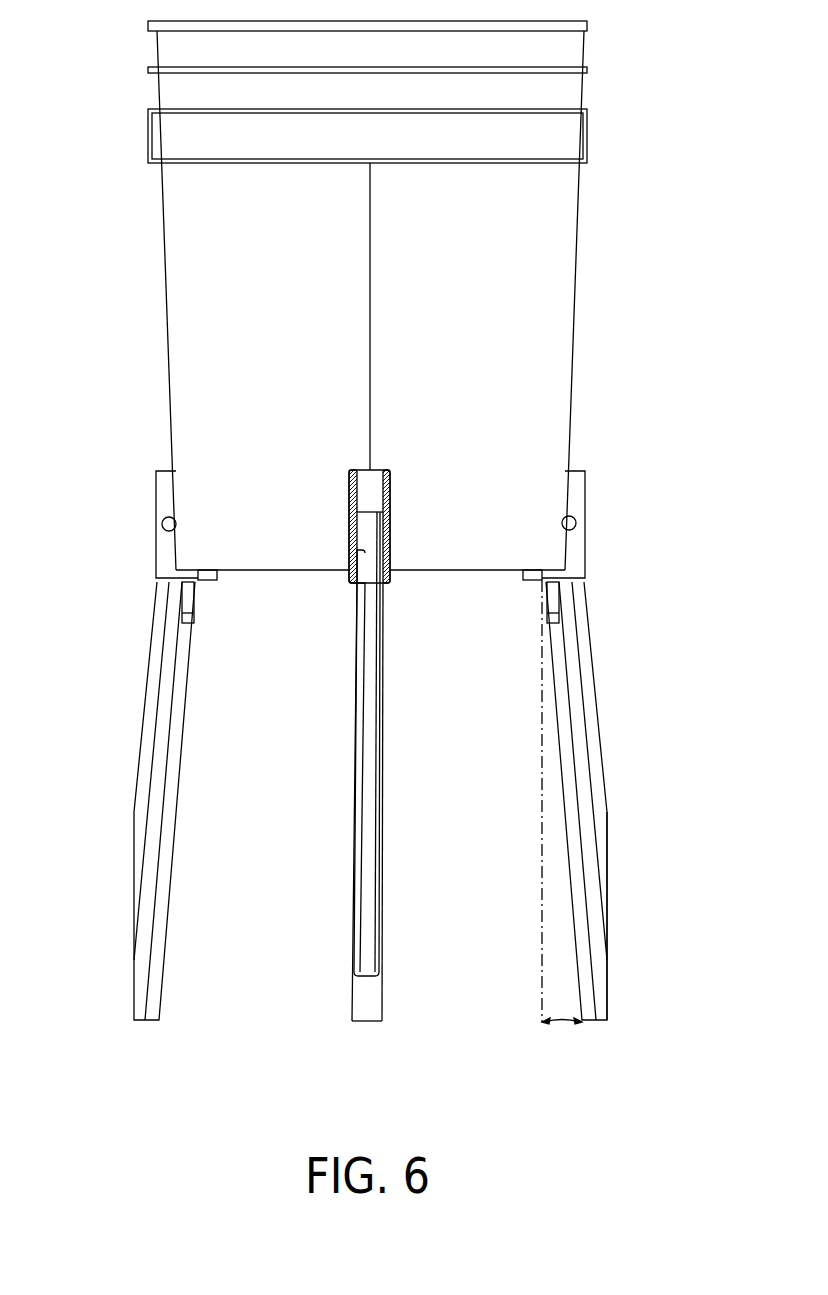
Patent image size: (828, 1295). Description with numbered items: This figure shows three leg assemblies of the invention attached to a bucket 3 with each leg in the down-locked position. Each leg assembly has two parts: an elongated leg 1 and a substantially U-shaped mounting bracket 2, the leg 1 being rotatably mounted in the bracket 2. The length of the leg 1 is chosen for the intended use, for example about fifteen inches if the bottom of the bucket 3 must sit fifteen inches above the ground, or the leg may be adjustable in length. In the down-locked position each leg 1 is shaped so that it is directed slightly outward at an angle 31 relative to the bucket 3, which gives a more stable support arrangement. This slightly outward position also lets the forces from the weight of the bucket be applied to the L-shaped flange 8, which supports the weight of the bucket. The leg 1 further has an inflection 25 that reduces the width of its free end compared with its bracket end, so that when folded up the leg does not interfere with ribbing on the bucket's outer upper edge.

The leg 1 is at (157, 811).
The mounting bracket 2 is at (165, 556).
The bucket 3 is at (527, 295).
The L-shaped flange 8 is at (207, 580).
The inflection 25 is at (605, 820).
The angle 31 is at (562, 1025).